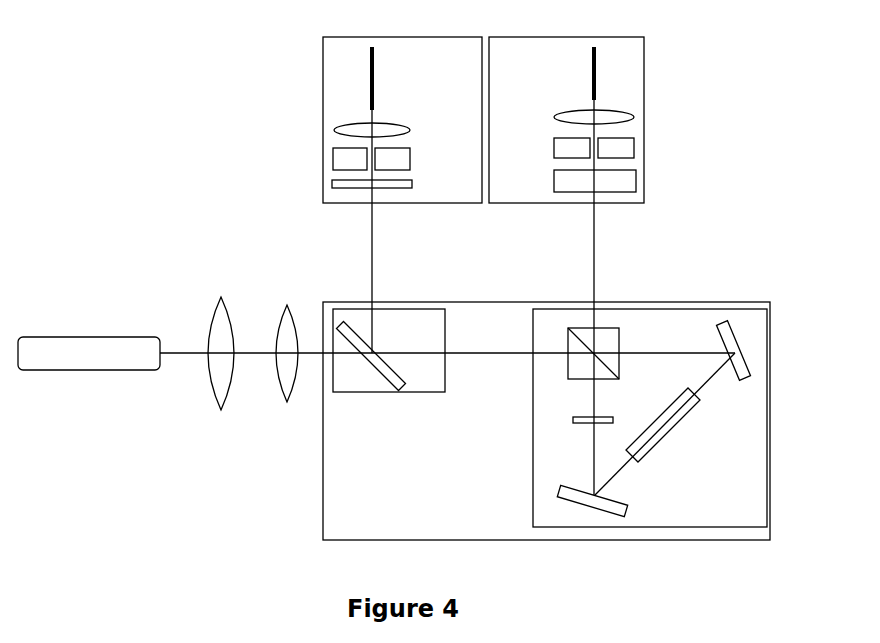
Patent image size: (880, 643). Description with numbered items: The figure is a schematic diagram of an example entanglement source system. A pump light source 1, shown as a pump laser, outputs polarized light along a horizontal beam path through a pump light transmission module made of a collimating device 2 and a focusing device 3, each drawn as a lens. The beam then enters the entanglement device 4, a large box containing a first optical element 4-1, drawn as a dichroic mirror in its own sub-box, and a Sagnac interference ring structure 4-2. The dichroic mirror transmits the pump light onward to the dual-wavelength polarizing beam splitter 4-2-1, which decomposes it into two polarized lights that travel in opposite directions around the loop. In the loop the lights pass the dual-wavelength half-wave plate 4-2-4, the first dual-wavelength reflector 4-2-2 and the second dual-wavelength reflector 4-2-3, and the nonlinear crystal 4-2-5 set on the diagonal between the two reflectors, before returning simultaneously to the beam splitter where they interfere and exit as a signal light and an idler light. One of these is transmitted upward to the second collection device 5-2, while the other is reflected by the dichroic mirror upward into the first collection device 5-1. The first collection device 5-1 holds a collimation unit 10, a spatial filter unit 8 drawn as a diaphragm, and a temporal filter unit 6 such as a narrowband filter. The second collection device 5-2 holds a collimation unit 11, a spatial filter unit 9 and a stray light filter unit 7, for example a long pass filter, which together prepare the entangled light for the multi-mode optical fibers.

The pump light source 1 is at (92, 337).
The collimating device 2 is at (221, 410).
The focusing device 3 is at (287, 402).
The entanglement device 4 is at (546, 421).
The first optical element 4-1 is at (389, 350).
The Sagnac interference ring structure 4-2 is at (650, 418).
The dual-wavelength polarizing beam splitter 4-2-1 is at (615, 356).
The first dual-wavelength reflector 4-2-2 is at (613, 505).
The second dual-wavelength reflector 4-2-3 is at (734, 365).
The dual-wavelength half-wave plate 4-2-4 is at (577, 418).
The PPKTP crystal 4-2-5 is at (673, 431).
The first collection device 5-1 is at (402, 120).
The second collection device 5-2 is at (566, 120).
The temporal filter unit 6 is at (412, 184).
The stray light filter unit 7 is at (552, 181).
The spatial filter unit 8 is at (410, 159).
The spatial filter unit 9 is at (552, 148).
The collimation unit 10 is at (410, 130).
The collimation unit 11 is at (554, 117).